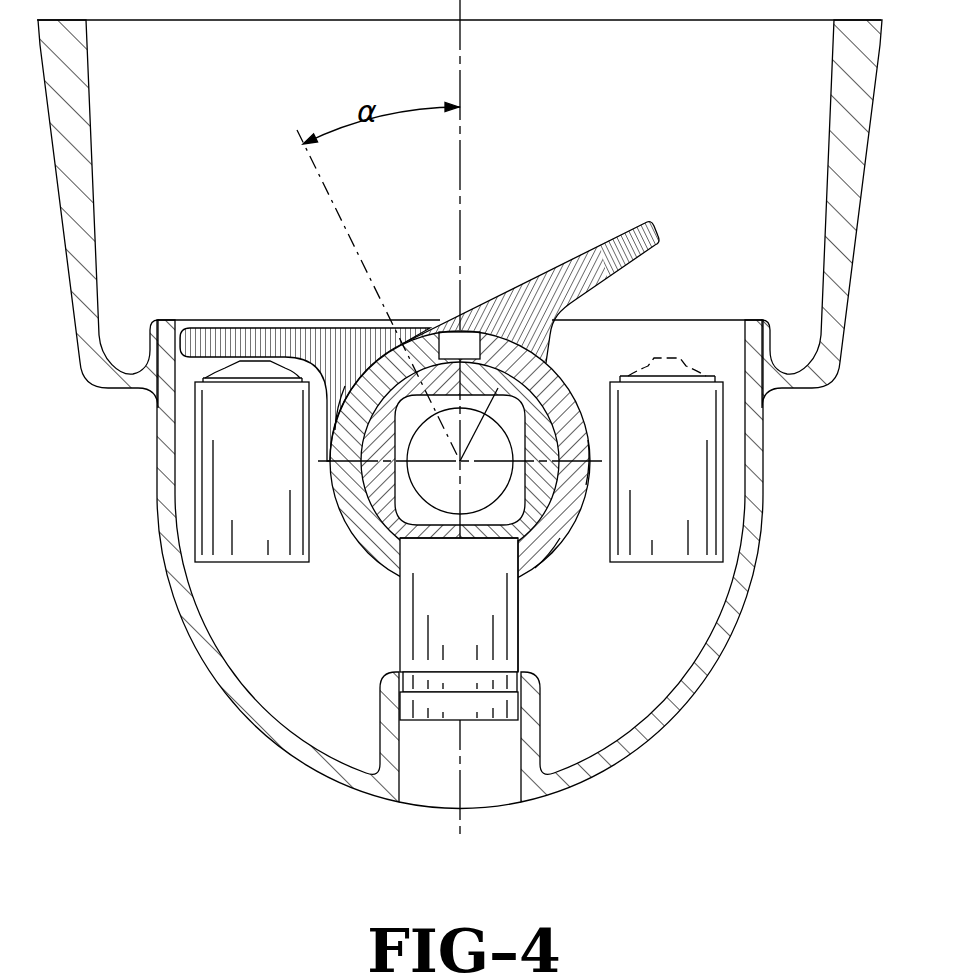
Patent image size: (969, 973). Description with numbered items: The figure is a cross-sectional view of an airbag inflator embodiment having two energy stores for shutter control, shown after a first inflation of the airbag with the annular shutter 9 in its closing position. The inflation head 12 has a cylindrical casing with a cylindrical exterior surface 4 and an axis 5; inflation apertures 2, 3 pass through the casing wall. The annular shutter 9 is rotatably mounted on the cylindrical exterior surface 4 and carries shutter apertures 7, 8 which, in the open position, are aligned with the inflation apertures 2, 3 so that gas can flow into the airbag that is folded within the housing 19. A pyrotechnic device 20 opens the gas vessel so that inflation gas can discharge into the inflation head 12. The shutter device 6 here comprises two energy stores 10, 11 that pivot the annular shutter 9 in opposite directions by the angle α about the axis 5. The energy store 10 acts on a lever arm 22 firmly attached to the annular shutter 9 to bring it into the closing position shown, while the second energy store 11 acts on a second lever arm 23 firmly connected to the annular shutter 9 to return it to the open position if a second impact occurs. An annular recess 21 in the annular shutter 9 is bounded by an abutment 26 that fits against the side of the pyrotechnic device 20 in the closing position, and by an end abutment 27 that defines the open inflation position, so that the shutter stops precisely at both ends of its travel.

The inflation aperture 2 is at (428, 382).
The inflation aperture 3 is at (511, 385).
The cylindrical exterior surface 4 is at (366, 442).
The axis 5 is at (455, 488).
The shutter device 6 is at (632, 624).
The shutter aperture 7 is at (363, 385).
The shutter aperture 8 is at (470, 338).
The annular shutter 9 is at (578, 443).
The energy store 10 is at (667, 506).
The second energy store 11 is at (250, 508).
The inflation head 12 is at (356, 556).
The housing 19 is at (88, 82).
The pyrotechnic device 20 is at (440, 630).
The annular recess 21 is at (527, 563).
The lever arm 22 is at (650, 222).
The second lever arm 23 is at (197, 347).
The abutment 26 is at (418, 568).
The end abutment 27 is at (548, 522).